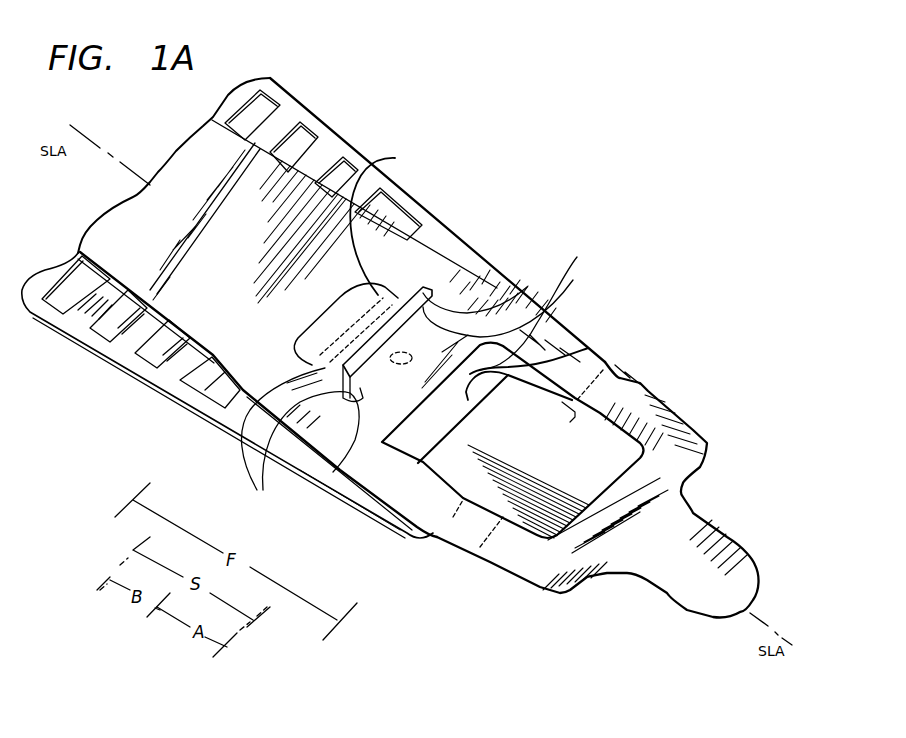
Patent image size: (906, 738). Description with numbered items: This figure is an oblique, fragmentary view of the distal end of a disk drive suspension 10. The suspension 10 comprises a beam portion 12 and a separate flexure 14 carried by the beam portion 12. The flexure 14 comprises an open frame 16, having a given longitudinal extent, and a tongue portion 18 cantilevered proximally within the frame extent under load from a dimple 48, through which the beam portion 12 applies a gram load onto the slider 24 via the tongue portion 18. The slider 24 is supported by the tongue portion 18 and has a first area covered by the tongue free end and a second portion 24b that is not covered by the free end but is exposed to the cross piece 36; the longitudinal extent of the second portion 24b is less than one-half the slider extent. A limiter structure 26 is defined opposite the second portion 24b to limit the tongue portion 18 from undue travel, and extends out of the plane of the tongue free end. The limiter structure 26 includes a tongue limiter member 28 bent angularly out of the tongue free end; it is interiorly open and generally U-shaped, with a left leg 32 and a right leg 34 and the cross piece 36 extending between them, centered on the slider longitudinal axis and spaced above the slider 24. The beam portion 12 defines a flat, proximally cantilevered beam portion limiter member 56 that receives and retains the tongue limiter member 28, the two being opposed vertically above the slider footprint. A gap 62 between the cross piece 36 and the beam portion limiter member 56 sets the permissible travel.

The suspension 10 is at (660, 267).
The beam portion 12 is at (287, 195).
The flexure 14 is at (181, 403).
The open frame 16 is at (367, 513).
The tongue portion 18 is at (578, 348).
The slider 24 is at (303, 451).
The second portion of slider 24b is at (268, 431).
The limiter structure 26 is at (473, 251).
The tongue limiter member 28 is at (478, 318).
The left leg 32 is at (342, 473).
The right leg 34 is at (493, 327).
The cross piece 36 is at (395, 158).
The dimple 48 is at (400, 366).
The beam portion limiter member 56 is at (392, 286).
The gap 62 is at (529, 306).